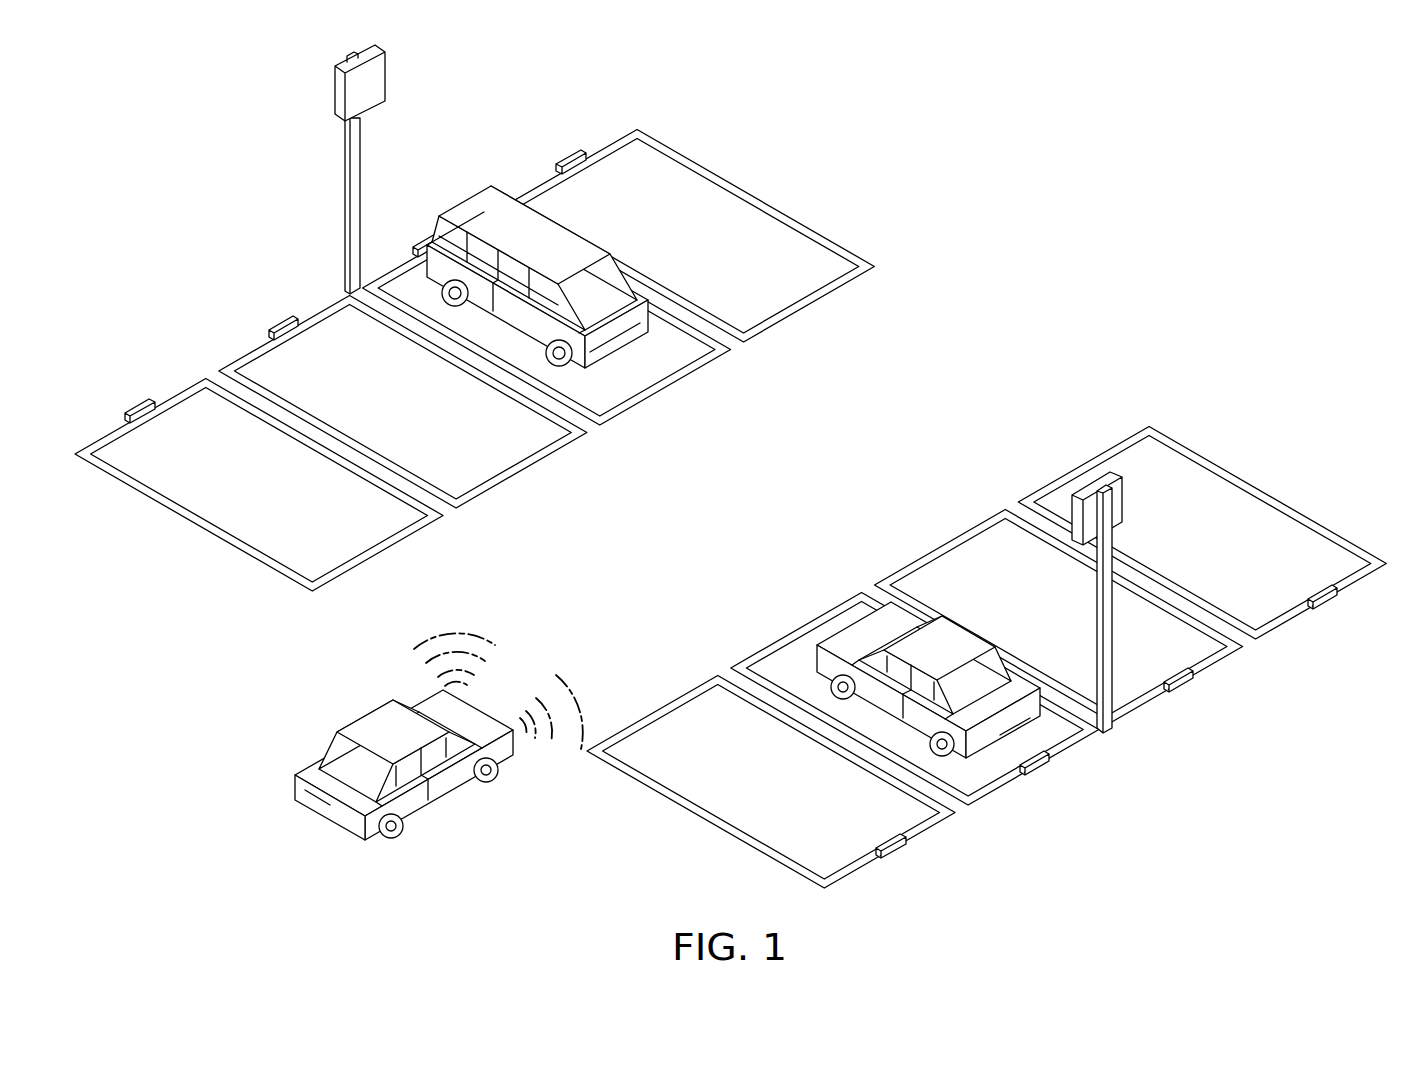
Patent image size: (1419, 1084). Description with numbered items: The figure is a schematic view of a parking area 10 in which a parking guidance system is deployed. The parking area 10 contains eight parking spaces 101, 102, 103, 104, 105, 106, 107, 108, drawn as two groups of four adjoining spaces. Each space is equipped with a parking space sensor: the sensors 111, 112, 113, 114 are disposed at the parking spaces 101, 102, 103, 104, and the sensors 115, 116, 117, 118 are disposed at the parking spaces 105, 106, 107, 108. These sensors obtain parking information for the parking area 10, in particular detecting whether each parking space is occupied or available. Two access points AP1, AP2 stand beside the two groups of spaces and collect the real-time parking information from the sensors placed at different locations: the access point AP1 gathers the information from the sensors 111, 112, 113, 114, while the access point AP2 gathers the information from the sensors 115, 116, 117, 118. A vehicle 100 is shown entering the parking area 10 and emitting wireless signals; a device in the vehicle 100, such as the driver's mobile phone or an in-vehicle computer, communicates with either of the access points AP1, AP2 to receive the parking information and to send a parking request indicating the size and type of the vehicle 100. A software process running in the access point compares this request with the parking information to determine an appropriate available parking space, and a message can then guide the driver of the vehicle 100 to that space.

The parking area 10 is at (1208, 146).
The vehicle 100 is at (386, 728).
The parking space 101 is at (790, 296).
The parking space 102 is at (650, 374).
The parking space 103 is at (510, 456).
The parking space 104 is at (368, 538).
The parking space 105 is at (1115, 455).
The parking space 106 is at (956, 548).
The parking space 107 is at (812, 632).
The parking space 108 is at (670, 715).
The parking space sensor 111 is at (562, 157).
The parking space sensor 112 is at (418, 240).
The parking space sensor 113 is at (275, 322).
The parking space sensor 114 is at (130, 404).
The parking space sensor 115 is at (1338, 596).
The parking space sensor 116 is at (1196, 680).
The parking space sensor 117 is at (1053, 764).
The parking space sensor 118 is at (912, 848).
The access point AP1 is at (380, 78).
The access point AP2 is at (1078, 480).